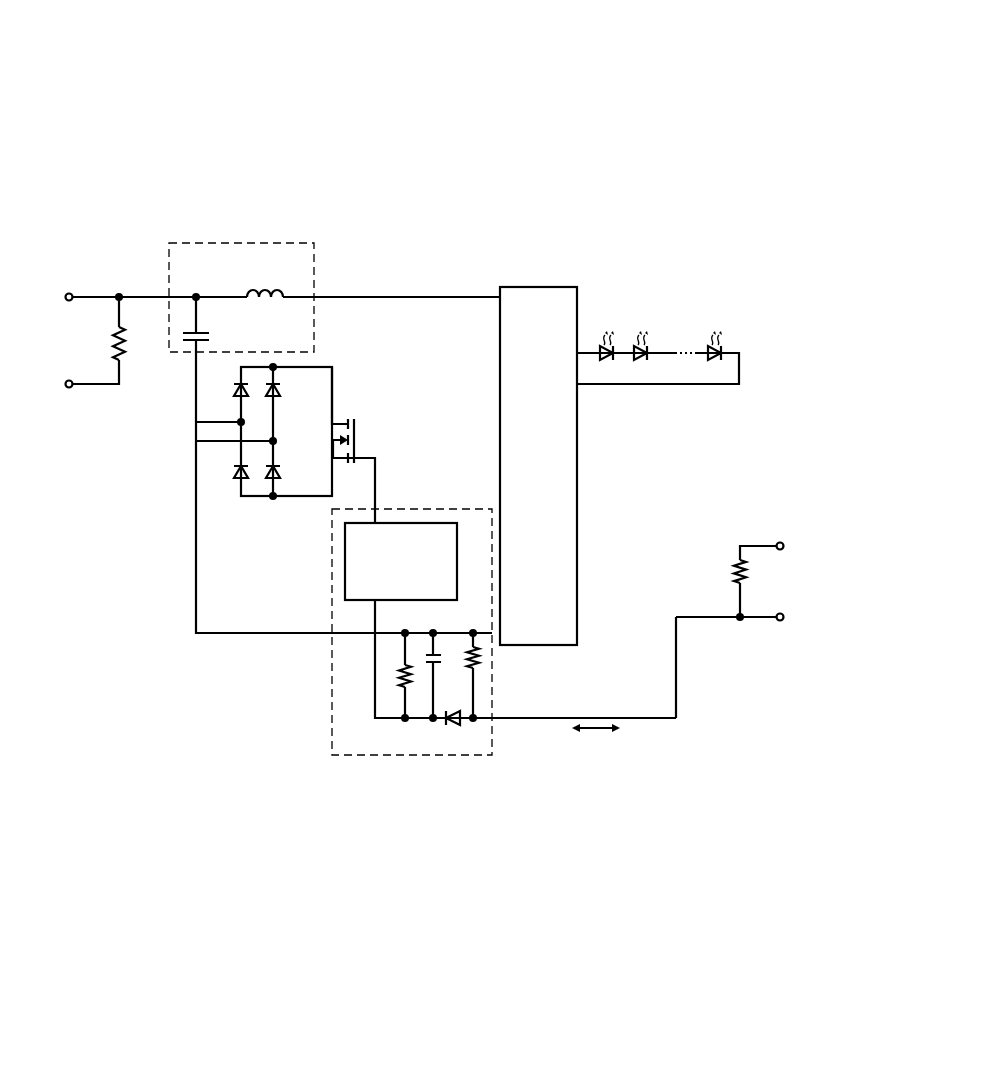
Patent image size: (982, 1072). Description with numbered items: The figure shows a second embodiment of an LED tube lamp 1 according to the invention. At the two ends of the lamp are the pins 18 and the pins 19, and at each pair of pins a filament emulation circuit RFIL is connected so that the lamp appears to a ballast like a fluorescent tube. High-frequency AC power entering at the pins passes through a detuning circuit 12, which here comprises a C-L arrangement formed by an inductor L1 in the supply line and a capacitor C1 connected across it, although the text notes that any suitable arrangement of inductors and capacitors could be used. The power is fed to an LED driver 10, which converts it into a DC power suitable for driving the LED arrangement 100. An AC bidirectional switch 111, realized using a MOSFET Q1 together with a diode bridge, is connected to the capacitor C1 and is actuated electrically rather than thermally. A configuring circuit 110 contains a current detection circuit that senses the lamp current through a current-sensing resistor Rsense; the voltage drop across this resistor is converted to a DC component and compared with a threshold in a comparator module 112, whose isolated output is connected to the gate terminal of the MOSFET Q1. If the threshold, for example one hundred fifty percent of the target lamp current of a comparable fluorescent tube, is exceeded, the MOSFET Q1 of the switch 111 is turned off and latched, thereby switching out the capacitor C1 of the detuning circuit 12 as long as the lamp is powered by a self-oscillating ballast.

The LED tube lamp 1 is at (572, 120).
The LED driver 10 is at (541, 287).
The detuning circuit 12 is at (277, 243).
The pins 18 is at (70, 293).
The pins 19 is at (780, 543).
The LED arrangement 100 is at (674, 330).
The configuring circuit 110 is at (465, 755).
The AC bidirectional switch 111 is at (353, 390).
The comparator module 112 is at (345, 578).
The inductor L1 is at (263, 292).
The capacitor C1 is at (210, 336).
The MOSFET Q1 is at (360, 440).
The filament emulation circuit RFIL is at (126, 347).
The current-sensing resistor Rsense is at (480, 660).